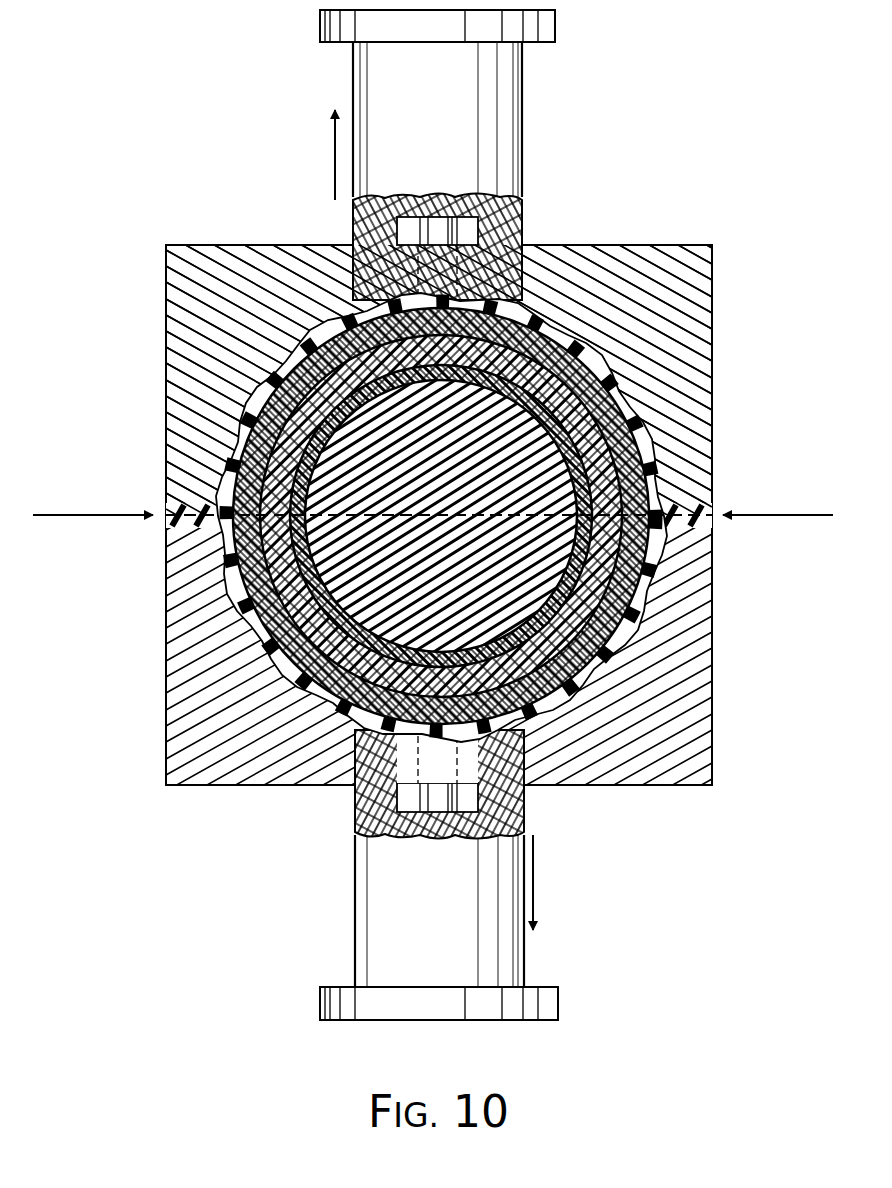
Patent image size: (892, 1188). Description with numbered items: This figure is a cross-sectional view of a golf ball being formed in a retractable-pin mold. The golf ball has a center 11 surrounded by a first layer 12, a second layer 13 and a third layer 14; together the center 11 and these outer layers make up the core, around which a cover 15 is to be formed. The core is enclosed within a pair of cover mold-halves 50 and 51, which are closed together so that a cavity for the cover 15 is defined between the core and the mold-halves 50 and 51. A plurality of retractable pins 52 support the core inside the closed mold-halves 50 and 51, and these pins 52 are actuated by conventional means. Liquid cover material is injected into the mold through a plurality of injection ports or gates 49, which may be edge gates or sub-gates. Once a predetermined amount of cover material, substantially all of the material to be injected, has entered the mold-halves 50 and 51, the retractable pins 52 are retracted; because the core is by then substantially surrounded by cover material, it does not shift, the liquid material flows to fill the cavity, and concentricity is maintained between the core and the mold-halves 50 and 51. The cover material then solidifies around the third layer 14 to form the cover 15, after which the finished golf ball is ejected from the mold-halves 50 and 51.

The center 11 is at (494, 542).
The first layer 12 is at (645, 462).
The second layer 13 is at (570, 450).
The third layer 14 is at (535, 313).
The cover 15 is at (250, 398).
The injection ports or gates 49 is at (717, 505).
The cover mold-half 50 is at (683, 655).
The cover mold-half 51 is at (683, 462).
The retractable pins 52 is at (503, 763).